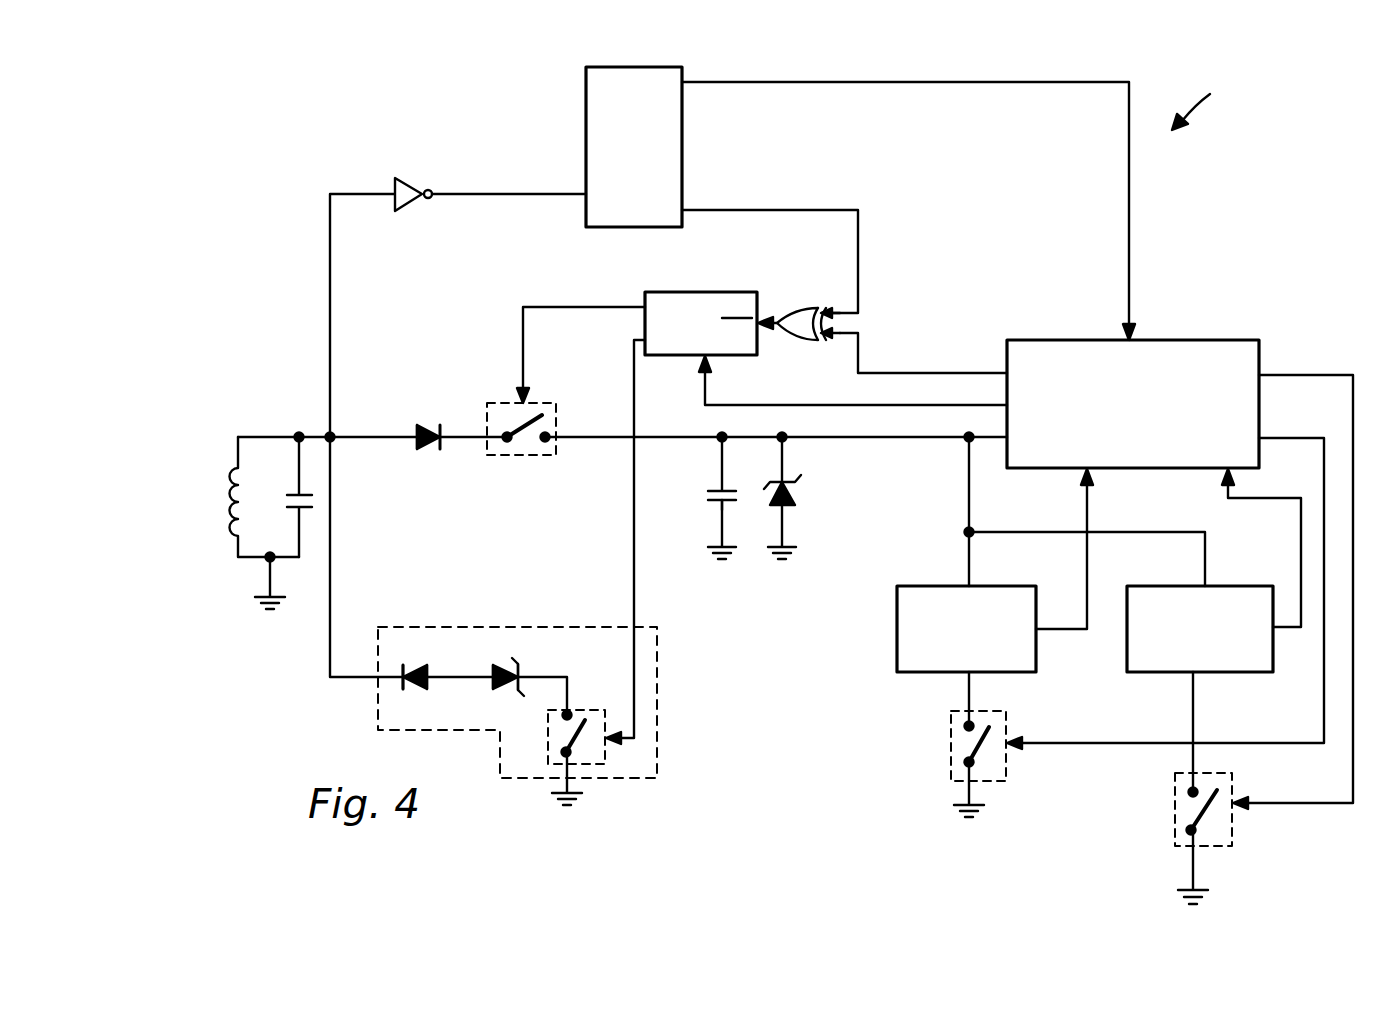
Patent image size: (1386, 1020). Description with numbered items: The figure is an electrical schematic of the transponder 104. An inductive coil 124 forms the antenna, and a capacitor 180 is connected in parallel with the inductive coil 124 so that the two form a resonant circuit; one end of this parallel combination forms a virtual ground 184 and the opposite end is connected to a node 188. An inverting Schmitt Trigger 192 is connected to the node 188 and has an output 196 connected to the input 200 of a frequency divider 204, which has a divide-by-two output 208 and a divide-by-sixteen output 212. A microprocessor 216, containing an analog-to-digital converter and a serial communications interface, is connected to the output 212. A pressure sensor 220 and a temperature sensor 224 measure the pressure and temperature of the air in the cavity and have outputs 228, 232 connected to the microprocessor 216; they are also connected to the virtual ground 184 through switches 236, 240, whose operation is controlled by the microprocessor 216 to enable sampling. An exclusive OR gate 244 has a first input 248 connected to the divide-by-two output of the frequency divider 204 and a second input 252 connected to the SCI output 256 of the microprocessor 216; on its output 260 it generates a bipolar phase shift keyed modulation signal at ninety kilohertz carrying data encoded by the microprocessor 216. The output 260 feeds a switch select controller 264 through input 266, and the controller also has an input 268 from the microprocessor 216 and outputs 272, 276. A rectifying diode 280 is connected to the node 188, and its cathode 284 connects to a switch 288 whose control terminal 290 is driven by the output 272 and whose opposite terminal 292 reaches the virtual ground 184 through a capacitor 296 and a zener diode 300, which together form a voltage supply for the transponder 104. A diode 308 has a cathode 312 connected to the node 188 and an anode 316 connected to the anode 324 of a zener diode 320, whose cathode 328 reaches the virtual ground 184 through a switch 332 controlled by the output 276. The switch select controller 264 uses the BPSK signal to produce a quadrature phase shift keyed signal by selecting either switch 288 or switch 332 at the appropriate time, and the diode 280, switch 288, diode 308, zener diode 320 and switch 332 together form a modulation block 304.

The transponder 104 is at (1248, 78).
The inductive coil 124 is at (224, 497).
The capacitor 180 is at (313, 503).
The virtual ground 184 is at (255, 600).
The node 188 is at (333, 435).
The inverting Schmitt Trigger 192 is at (403, 212).
The output 196 is at (433, 189).
The input 200 is at (584, 198).
The frequency divider 204 is at (600, 66).
The output 208 is at (686, 207).
The output 212 is at (686, 80).
The microprocessor 216 is at (1187, 350).
The pressure sensor 220 is at (1022, 672).
The temperature sensor 224 is at (1266, 672).
The output 228 is at (1037, 628).
The output 232 is at (1275, 627).
The switch 236 is at (1007, 760).
The switch 240 is at (1234, 838).
The exclusive OR gate 244 is at (780, 345).
The first input 248 is at (826, 310).
The second input 252 is at (822, 342).
The SCI output 256 is at (1007, 373).
The output 260 is at (780, 312).
The switch select controller 264 is at (657, 292).
The input 266 is at (713, 313).
The input 268 is at (700, 356).
The output 272 is at (645, 305).
The output 276 is at (645, 340).
The rectifying diode 280 is at (418, 450).
The cathode 284 is at (458, 400).
The switch 288 is at (520, 457).
The control terminal 290 is at (526, 400).
The opposite terminal 292 is at (549, 432).
The capacitor 296 is at (706, 495).
The zener diode 300 is at (800, 495).
The modulation block 304 is at (658, 690).
The diode 308 is at (412, 665).
The cathode 312 is at (400, 682).
The anode 316 is at (438, 676).
The zener diode 320 is at (500, 665).
The anode 324 is at (490, 677).
The cathode 328 is at (525, 680).
The switch 332 is at (606, 722).